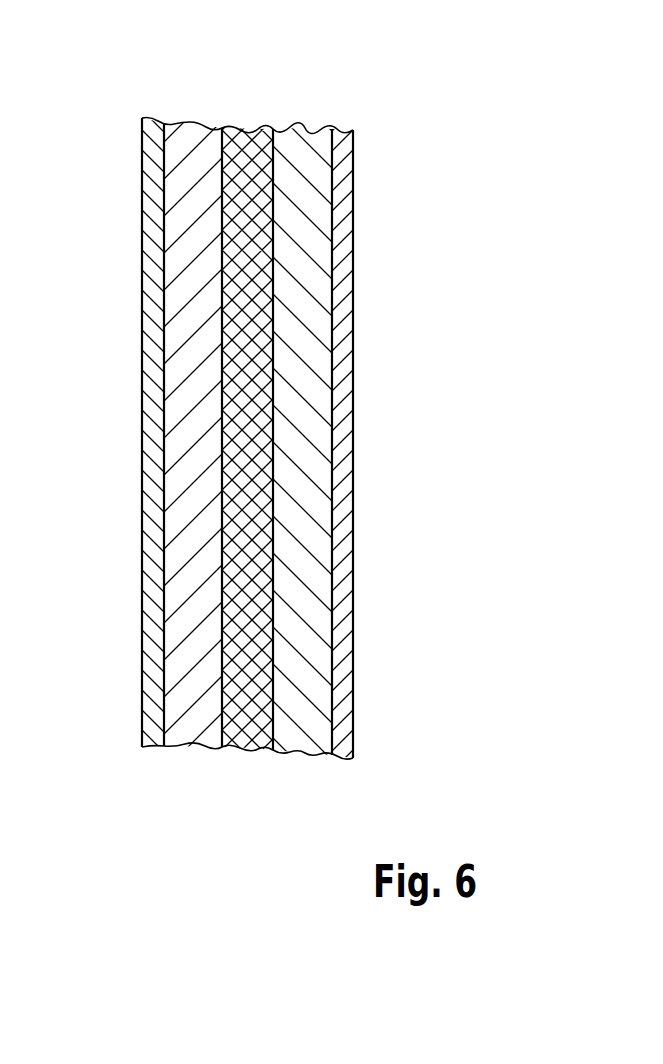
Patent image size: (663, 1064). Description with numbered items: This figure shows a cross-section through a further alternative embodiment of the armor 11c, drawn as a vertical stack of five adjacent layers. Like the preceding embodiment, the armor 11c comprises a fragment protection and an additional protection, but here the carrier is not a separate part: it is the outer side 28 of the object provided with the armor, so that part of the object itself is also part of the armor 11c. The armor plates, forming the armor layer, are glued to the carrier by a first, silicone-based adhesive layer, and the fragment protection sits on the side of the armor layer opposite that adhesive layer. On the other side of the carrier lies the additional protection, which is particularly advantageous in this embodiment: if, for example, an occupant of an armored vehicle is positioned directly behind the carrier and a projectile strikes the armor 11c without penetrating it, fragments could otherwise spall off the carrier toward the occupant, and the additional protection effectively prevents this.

The armor 11c is at (392, 168).
The outer side 28 is at (197, 116).